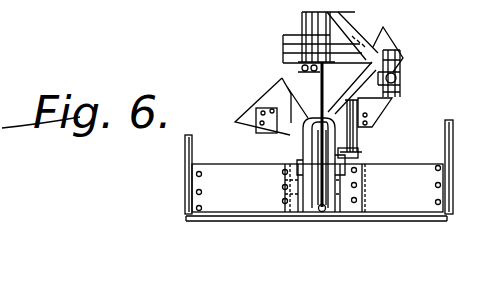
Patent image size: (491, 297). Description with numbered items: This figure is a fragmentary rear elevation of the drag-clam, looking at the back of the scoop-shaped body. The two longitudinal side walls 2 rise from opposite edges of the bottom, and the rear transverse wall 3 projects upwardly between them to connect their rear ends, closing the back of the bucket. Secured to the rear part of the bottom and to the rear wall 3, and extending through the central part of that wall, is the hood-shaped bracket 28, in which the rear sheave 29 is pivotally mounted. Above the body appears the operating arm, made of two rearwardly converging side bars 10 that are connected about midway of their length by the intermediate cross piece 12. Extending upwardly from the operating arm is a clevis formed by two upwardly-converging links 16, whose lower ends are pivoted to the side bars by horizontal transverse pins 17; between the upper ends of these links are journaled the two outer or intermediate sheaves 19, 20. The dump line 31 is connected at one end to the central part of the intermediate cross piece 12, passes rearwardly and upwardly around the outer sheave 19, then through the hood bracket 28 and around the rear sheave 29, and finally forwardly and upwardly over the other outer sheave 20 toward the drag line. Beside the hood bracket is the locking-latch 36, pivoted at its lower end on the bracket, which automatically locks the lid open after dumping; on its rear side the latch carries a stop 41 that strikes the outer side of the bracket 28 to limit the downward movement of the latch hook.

The longitudinal side wall 2 is at (185, 143).
The rear transverse wall 3 is at (316, 192).
The side bar of operating arm 10 is at (403, 60).
The intermediate cross piece 12 is at (283, 60).
The clevis link 16 is at (362, 23).
The transverse pin 17 is at (400, 82).
The outer sheave 19 is at (300, 20).
The outer sheave 20 is at (351, 88).
The hood-shaped bracket 28 is at (302, 147).
The rear sheave 29 is at (320, 212).
The dump line 31 is at (320, 87).
The locking-latch 36 is at (358, 141).
The stop 41 is at (350, 157).